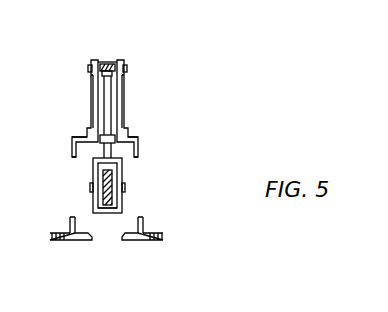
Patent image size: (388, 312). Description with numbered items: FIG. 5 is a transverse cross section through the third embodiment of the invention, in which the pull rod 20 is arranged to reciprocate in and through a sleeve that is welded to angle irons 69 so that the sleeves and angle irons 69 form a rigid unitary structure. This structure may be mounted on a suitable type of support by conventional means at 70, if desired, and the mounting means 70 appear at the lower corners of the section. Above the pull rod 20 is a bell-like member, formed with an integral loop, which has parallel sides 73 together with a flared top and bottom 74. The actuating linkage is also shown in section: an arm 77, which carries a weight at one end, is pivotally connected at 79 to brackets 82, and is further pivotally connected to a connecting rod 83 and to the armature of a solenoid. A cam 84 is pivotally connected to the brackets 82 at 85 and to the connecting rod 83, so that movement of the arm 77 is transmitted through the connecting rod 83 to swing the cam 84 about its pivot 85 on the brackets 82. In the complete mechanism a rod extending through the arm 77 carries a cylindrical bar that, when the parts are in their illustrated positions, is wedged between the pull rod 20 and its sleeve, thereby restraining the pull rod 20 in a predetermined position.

The pull rod 20 is at (100, 194).
The angle irons 69 is at (74, 145).
The mounting means 70 is at (51, 239).
The parallel sides 73 is at (98, 172).
The flared top and bottom 74 is at (113, 212).
The arm 77 is at (103, 67).
The pivotal connection 79 is at (126, 68).
The brackets 82 is at (96, 99).
The connecting rod 83 is at (107, 105).
The cam 84 is at (113, 147).
The pivotal connection 85 is at (91, 119).